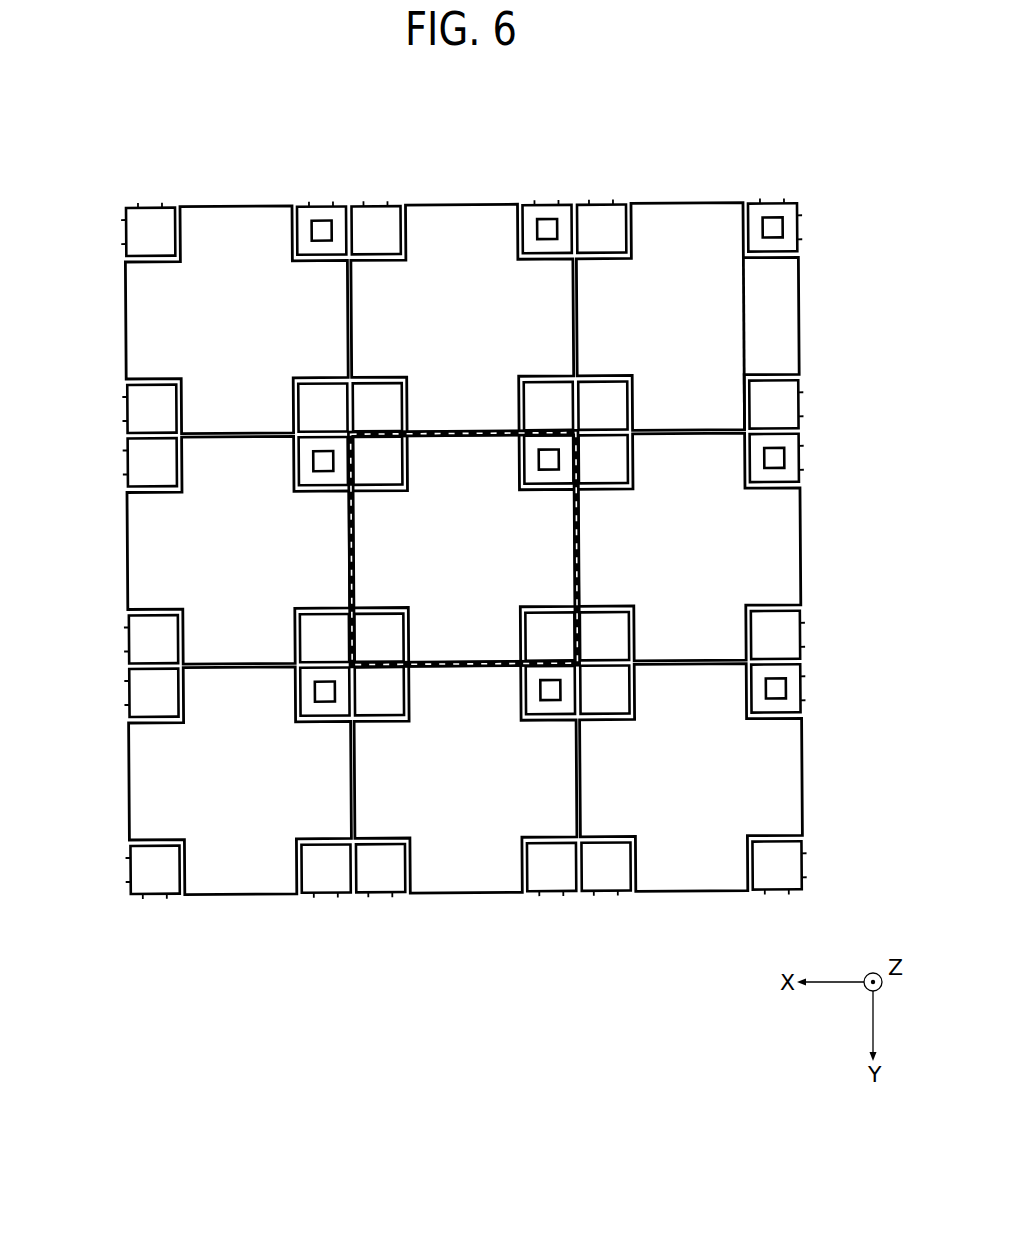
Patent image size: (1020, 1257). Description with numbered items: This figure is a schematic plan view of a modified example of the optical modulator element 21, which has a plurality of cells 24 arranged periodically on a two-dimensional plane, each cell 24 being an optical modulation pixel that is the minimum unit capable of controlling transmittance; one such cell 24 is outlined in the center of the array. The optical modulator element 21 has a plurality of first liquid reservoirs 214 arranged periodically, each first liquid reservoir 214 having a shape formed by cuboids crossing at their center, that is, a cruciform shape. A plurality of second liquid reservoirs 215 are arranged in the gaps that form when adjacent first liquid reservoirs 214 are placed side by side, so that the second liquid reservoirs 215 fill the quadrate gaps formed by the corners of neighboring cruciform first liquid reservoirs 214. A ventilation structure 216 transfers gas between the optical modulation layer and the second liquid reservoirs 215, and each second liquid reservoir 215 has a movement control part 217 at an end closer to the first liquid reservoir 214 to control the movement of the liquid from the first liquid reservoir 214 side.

The optical modulator element 21 is at (518, 171).
The first liquid reservoir 214 is at (799, 308).
The second liquid reservoir 215 is at (808, 405).
The ventilation structure 216 is at (808, 458).
The movement control part 217 is at (729, 401).
The cell 24 is at (587, 534).